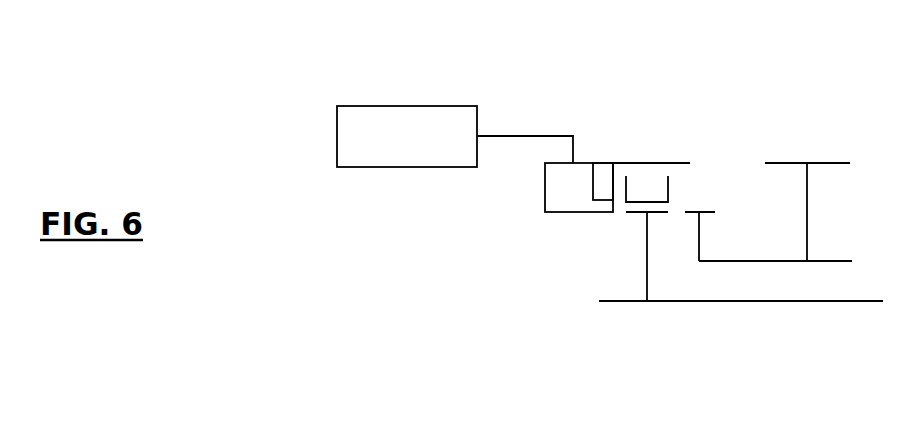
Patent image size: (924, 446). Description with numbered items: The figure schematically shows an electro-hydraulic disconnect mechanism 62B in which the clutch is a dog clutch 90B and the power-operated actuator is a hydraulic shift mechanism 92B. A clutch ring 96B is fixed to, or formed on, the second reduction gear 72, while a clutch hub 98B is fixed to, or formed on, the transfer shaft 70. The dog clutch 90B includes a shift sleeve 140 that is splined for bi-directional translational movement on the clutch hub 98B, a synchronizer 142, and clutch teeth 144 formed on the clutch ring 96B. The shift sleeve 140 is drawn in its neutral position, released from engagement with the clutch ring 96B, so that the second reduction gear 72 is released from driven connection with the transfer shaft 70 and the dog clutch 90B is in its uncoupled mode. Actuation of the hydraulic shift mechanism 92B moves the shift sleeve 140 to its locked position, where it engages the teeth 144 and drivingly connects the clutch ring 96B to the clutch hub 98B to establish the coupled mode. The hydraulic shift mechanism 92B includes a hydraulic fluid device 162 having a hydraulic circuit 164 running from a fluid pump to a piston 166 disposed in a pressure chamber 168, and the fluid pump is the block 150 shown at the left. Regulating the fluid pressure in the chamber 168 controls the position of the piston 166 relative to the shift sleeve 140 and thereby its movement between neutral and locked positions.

The actuator 150 is at (388, 115).
The hydraulic shift mechanism 92B is at (478, 94).
The hydraulic fluid device 162 is at (500, 132).
The hydraulic circuit 164 is at (534, 135).
The dog clutch 90B is at (615, 146).
The pressure chamber 168 is at (556, 187).
The piston 166 is at (601, 188).
The shift sleeve 140 is at (670, 184).
The clutch hub 98B is at (647, 262).
The disconnect mechanism 62B is at (807, 89).
The transfer shaft 70 is at (857, 301).
The second reduction gear 72 is at (825, 163).
The clutch ring 96B is at (700, 240).
The clutch teeth 144 is at (705, 212).
The synchronizer 142 is at (686, 222).